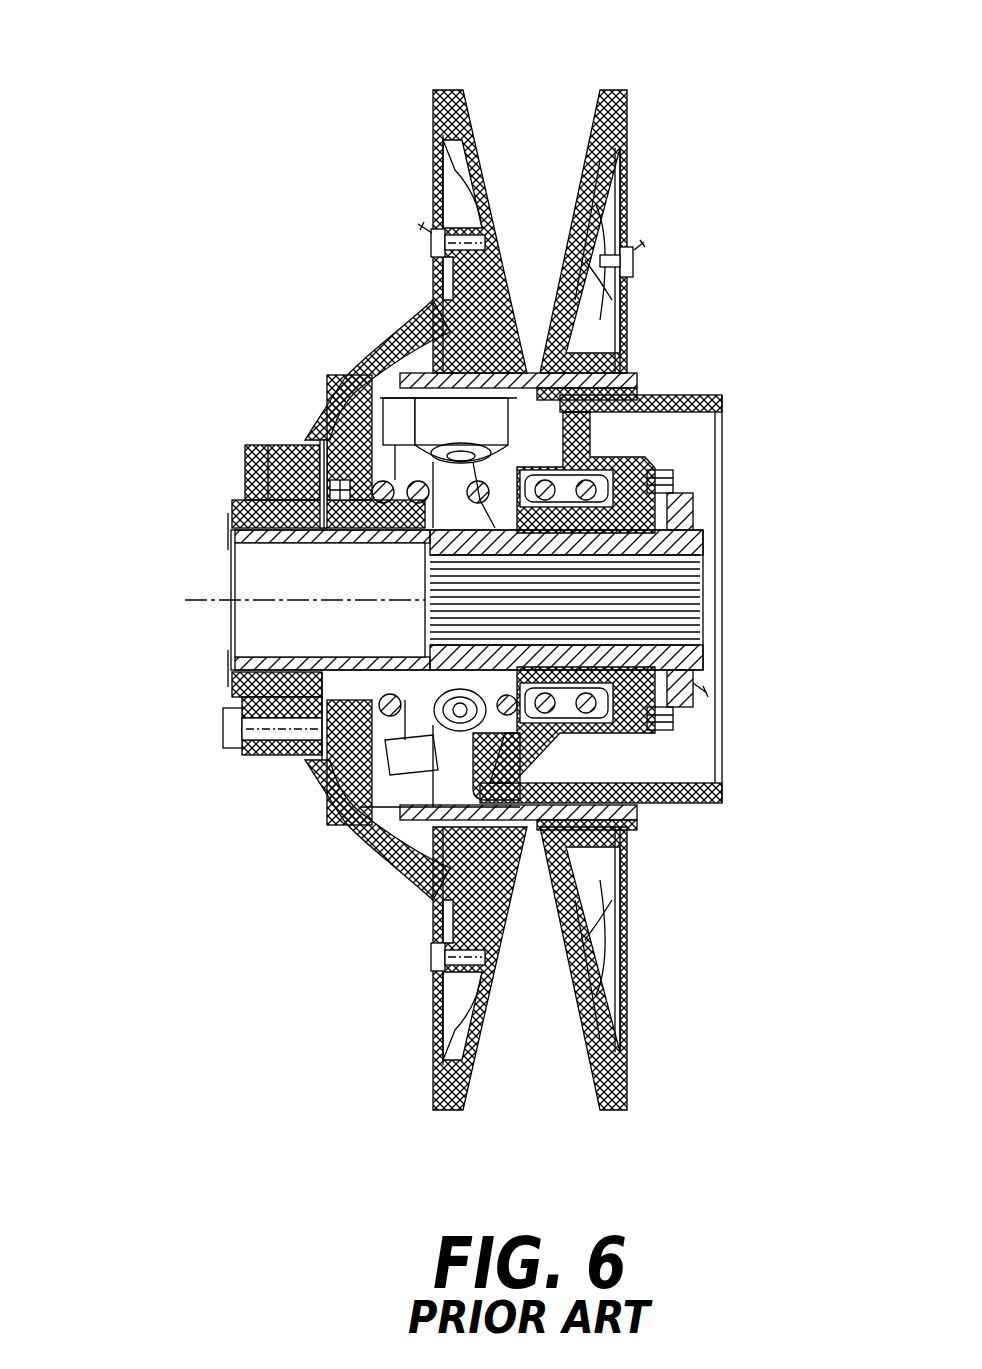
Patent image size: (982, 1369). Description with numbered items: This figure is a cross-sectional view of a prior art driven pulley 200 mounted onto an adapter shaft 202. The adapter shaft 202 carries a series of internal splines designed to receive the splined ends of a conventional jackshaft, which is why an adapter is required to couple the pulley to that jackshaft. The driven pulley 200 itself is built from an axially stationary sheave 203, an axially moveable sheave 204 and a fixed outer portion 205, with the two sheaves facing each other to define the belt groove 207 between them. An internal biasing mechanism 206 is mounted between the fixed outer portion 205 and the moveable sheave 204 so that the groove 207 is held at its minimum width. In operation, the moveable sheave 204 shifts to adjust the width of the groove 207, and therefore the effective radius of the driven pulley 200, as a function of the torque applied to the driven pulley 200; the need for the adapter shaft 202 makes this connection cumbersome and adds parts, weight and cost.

The prior art driven pulley 200 is at (238, 274).
The adapter shaft 202 is at (250, 574).
The axially stationary sheave 203 is at (452, 90).
The axially moveable sheave 204 is at (616, 90).
The fixed outer portion 205 is at (692, 395).
The internal biasing mechanism 206 is at (350, 783).
The groove 207 is at (503, 177).